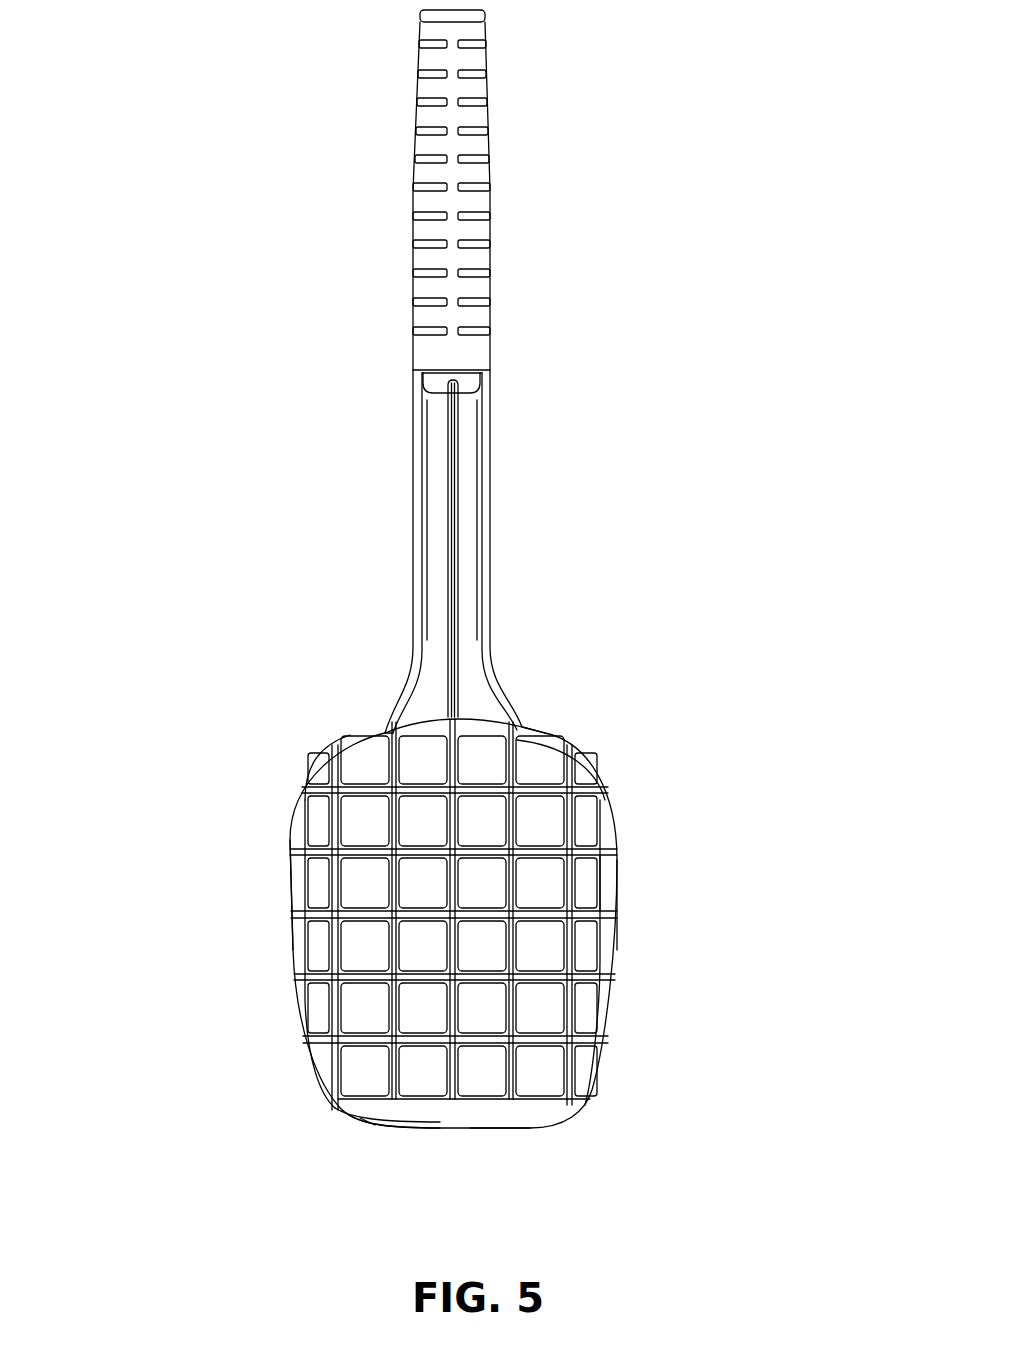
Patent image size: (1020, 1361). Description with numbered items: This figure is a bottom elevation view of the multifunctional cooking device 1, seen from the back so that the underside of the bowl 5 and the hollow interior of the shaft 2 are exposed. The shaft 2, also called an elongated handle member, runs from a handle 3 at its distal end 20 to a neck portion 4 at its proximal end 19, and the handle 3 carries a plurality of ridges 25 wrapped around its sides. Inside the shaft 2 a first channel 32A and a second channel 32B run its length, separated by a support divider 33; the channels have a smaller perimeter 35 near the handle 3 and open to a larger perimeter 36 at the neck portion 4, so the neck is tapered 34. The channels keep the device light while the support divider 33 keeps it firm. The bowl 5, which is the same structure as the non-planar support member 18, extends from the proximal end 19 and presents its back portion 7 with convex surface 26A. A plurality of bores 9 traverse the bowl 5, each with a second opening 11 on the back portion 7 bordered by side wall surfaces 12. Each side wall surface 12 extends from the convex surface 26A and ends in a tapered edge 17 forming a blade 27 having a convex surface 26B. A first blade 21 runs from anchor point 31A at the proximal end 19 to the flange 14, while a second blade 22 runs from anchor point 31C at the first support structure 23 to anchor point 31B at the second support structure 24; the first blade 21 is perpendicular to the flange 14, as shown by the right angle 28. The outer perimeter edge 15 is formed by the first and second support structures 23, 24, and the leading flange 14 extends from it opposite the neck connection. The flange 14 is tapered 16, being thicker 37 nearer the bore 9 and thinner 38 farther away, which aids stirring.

The multifunctional cooking device 1 is at (260, 1058).
The shaft 2 is at (487, 408).
The handle 3 is at (415, 200).
The neck portion 4 is at (385, 700).
The bowl 5 is at (290, 822).
The back portion 7 is at (600, 822).
The bore 9 is at (362, 1085).
The second opening 11 is at (400, 1015).
The side wall surface 12 is at (428, 970).
The leading flange 14 is at (510, 1130).
The outer perimeter edge 15 is at (305, 905).
The tapered 16 is at (368, 1135).
The tapered edge 17 is at (490, 935).
The non-planar support member 18 is at (608, 887).
The proximal end 19 is at (500, 705).
The distal end 20 is at (415, 405).
The first blade 21 is at (512, 1020).
The second blade 22 is at (612, 990).
The first support structure 23 is at (320, 958).
The second support structure 24 is at (612, 928).
The ridges 25 is at (470, 130).
The convex surface 26A is at (618, 845).
The convex surface 26B is at (612, 795).
The blade 27 is at (305, 855).
The angle 28 is at (330, 970).
The anchor point 31A is at (540, 727).
The anchor point 31B is at (612, 866).
The anchor point 31C is at (300, 862).
The first channel 32A is at (432, 485).
The second channel 32B is at (473, 472).
The support divider 33 is at (455, 520).
The tapered 34 is at (385, 718).
The smaller perimeter 35 is at (432, 395).
The larger perimeter 36 is at (380, 738).
The thicker 37 is at (370, 1107).
The thinner 38 is at (372, 1125).